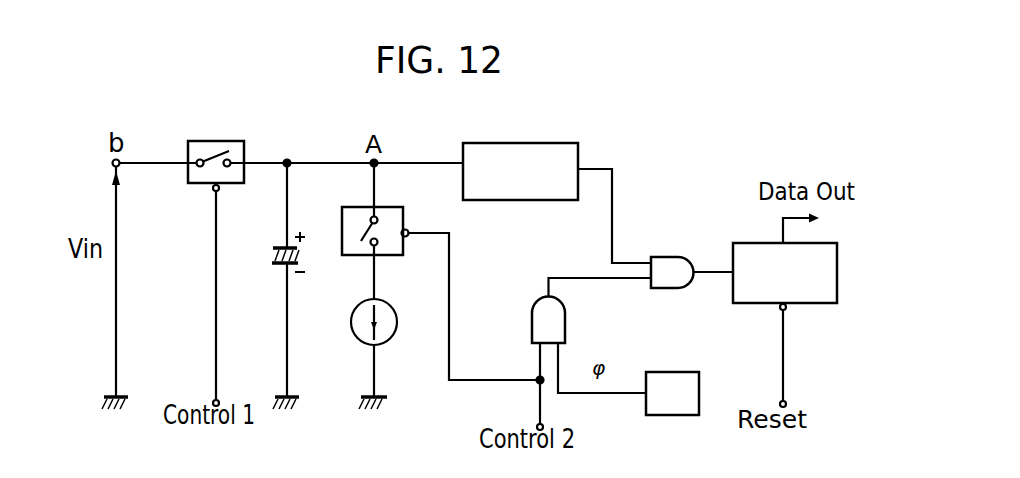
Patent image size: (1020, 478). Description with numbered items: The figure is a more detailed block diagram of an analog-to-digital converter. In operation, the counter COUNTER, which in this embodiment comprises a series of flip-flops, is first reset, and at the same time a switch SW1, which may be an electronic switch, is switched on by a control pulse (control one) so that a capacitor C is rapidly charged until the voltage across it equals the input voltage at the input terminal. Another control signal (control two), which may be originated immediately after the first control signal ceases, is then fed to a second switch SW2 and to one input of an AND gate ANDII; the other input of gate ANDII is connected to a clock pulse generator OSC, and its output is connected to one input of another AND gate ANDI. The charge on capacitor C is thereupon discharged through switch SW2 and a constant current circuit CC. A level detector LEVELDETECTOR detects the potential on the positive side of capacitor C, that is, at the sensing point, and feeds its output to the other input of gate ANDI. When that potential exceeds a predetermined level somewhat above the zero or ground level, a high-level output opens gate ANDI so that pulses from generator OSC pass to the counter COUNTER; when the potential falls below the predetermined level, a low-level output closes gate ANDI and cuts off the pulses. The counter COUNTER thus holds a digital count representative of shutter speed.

The switch SW1 is at (239, 157).
The switch SW2 is at (397, 246).
The capacitor C is at (274, 255).
The constant current circuit CC is at (384, 337).
The level detector LEVELDETECTOR is at (530, 151).
The AND gate ANDI is at (667, 260).
The AND gate ANDII is at (565, 318).
The clock pulse generator OSC is at (672, 393).
The counter COUNTER is at (785, 273).